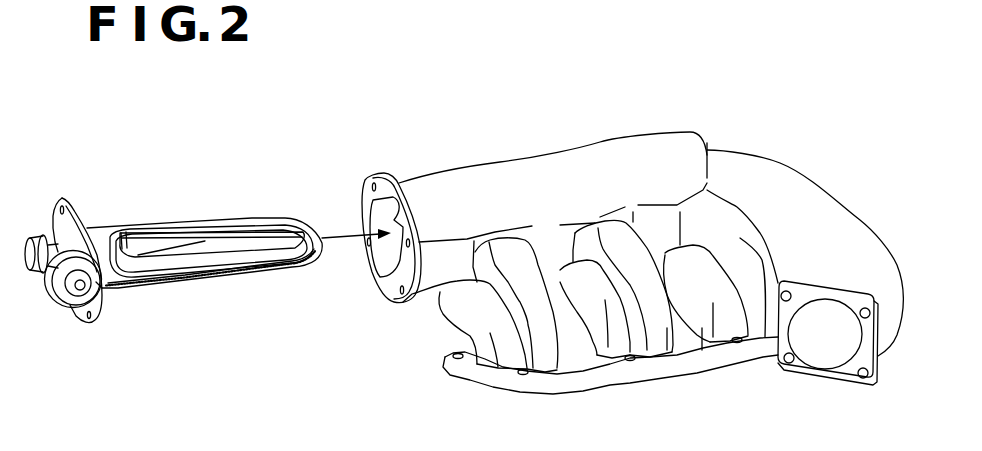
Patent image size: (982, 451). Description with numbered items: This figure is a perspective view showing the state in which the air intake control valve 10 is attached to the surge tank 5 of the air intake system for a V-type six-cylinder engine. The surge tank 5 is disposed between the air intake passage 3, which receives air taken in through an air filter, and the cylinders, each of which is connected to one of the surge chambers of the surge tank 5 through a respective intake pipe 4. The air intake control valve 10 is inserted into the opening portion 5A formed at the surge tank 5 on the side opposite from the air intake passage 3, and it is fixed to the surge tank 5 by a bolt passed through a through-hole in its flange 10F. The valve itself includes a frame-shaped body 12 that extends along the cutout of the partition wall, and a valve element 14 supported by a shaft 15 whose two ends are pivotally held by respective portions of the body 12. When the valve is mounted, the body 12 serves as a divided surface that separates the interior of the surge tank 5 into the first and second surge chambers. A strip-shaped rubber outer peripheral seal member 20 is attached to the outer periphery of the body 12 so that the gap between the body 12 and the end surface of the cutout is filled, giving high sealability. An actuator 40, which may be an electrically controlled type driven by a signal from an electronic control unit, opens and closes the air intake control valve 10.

The air intake passage 3 is at (818, 192).
The intake pipes 4 is at (727, 275).
The surge tank 5 is at (547, 158).
The opening portion 5A is at (388, 252).
The air intake control valve 10 is at (182, 199).
The flange 10F is at (64, 199).
The body 12 is at (282, 217).
The valve element 14 is at (223, 233).
The shaft 15 is at (126, 248).
The outer peripheral seal member 20 is at (207, 277).
The actuator 40 is at (65, 326).